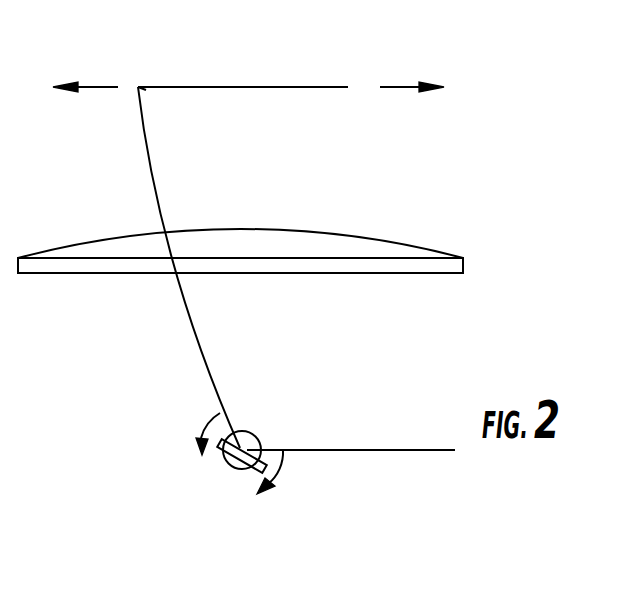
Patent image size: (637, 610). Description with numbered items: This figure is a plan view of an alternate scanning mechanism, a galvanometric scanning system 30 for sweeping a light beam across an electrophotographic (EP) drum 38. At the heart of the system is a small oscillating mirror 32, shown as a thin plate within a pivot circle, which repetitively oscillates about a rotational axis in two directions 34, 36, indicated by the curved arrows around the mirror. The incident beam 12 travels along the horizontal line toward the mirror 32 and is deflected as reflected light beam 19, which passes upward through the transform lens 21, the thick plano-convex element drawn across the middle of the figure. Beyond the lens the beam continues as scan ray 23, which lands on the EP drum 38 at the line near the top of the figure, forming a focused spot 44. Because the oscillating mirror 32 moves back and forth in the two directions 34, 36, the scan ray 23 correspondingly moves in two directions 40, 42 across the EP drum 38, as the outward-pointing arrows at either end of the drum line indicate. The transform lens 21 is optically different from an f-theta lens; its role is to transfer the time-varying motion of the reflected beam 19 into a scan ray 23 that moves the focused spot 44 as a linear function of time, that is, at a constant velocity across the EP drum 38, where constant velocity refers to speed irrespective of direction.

The incident beam 12 is at (389, 451).
The reflected light beam 19 is at (217, 375).
The transform lens 21 is at (322, 275).
The scan ray 23 is at (155, 168).
The scanning system 30 is at (480, 176).
The oscillating mirror 32 is at (253, 472).
The mirror direction 34 is at (283, 470).
The mirror direction 36 is at (220, 413).
The electrophotographic drum 38 is at (280, 88).
The scan ray direction 40 is at (402, 85).
The scan ray direction 42 is at (105, 85).
The focused spot 44 is at (140, 89).